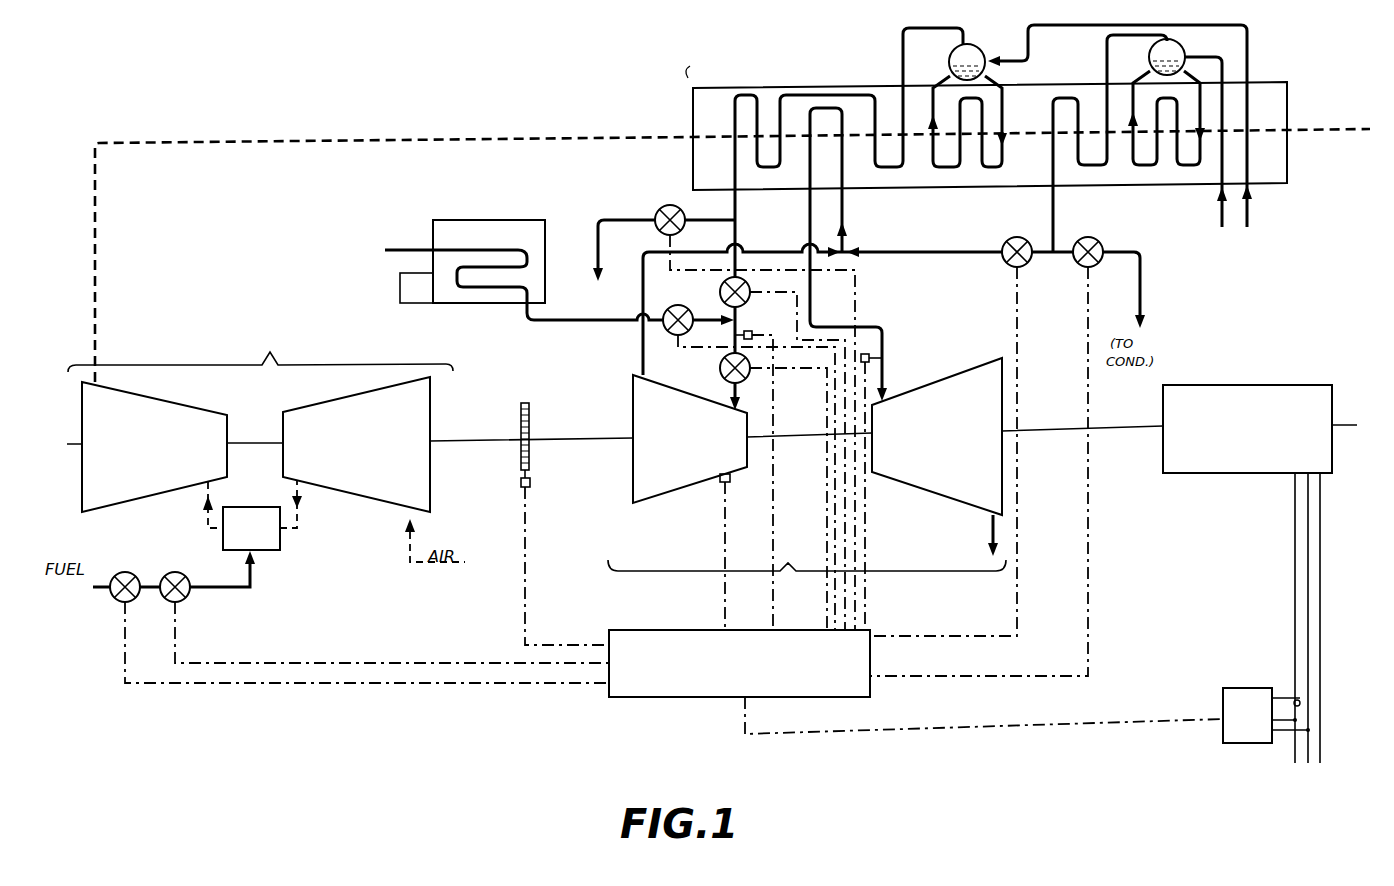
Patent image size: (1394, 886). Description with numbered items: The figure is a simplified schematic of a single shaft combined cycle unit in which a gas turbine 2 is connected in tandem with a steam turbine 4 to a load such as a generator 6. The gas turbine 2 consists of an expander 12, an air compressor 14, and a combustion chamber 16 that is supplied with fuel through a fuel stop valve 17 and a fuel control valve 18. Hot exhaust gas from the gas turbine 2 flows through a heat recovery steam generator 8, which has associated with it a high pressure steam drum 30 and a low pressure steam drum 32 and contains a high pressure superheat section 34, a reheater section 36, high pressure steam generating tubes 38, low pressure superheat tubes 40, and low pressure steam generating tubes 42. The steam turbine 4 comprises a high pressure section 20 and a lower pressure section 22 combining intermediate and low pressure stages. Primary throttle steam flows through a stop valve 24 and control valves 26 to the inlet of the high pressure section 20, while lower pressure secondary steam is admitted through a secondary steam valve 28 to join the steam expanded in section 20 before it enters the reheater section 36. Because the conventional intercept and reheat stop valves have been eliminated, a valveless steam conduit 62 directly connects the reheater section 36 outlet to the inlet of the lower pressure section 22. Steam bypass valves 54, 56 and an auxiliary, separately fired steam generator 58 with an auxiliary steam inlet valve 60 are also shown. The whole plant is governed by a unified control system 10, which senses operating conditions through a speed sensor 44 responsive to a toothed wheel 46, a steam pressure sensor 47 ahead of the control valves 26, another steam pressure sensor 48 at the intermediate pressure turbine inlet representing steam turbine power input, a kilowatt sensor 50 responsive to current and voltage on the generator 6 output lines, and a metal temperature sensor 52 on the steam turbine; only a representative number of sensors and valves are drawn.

The gas turbine 2 is at (260, 347).
The steam turbine 4 is at (807, 586).
The generator 6 is at (1247, 475).
The heat recovery steam generator 8 is at (986, 123).
The control system 10 is at (633, 698).
The expander 12 is at (193, 407).
The air compressor 14 is at (328, 398).
The combustion chamber 16 is at (278, 552).
The fuel stop valve 17 is at (136, 574).
The fuel control valve 18 is at (183, 573).
The high pressure section 20 is at (678, 492).
The lower pressure section 22 is at (933, 493).
The stop valve 24 is at (745, 300).
The control valves 26 is at (720, 372).
The secondary steam valve 28 is at (1005, 261).
The high pressure steam drum 30 is at (981, 51).
The low pressure steam drum 32 is at (1187, 45).
The high pressure superheat section 34 is at (770, 168).
The reheater section 36 is at (830, 106).
The high pressure steam generating tubes 38 is at (948, 172).
The low pressure superheat tubes 40 is at (1060, 96).
The low pressure steam generating tubes 42 is at (1192, 168).
The speed sensor 44 is at (521, 486).
The toothed wheel 46 is at (520, 418).
The steam pressure sensor 47 is at (742, 345).
The steam pressure sensor 48 is at (870, 354).
The kilowatt sensor 50 is at (1232, 745).
The sensor 52 is at (731, 480).
The steam bypass valve 54 is at (660, 209).
The steam bypass valve 56 is at (1080, 268).
The auxiliary steam generator 58 is at (490, 220).
The auxiliary steam inlet valve 60 is at (694, 306).
The valveless steam conduit 62 is at (812, 295).